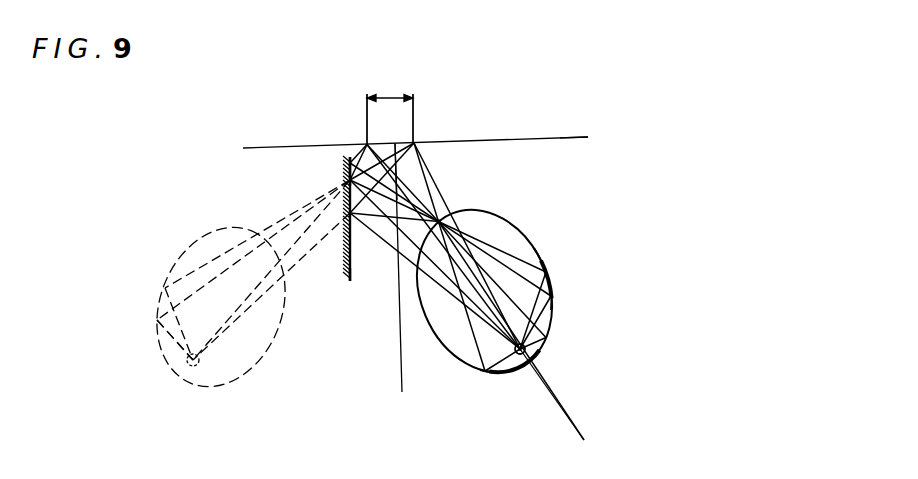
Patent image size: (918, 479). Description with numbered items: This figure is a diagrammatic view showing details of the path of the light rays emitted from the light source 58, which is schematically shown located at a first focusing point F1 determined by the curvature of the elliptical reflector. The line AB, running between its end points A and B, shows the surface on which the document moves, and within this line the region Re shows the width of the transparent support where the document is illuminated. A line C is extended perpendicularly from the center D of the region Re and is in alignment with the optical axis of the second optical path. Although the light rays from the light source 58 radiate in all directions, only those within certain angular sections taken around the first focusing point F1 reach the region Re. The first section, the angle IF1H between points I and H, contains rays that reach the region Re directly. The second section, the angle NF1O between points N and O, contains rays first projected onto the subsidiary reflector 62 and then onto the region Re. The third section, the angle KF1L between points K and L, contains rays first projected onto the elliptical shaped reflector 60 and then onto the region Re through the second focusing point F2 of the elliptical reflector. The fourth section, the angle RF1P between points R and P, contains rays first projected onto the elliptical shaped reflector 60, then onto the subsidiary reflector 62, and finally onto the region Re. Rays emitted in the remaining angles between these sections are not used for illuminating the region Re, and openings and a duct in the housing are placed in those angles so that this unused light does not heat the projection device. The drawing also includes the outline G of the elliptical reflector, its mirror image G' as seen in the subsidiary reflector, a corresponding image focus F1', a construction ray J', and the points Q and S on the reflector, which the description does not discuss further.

The light source 58 is at (520, 372).
The elliptical shaped reflector 60 is at (548, 270).
The subsidiary reflector 62 is at (349, 282).
The end point of line AB A is at (403, 148).
The end point of line AB B is at (584, 138).
The line perpendicular to region Re C is at (400, 380).
The center of region Re D is at (405, 142).
The elliptical mirror G is at (484, 286).
The virtual image of elliptical mirror G' is at (205, 307).
The boundary point of angle IF1H H is at (418, 142).
The boundary point of angle IF1H I is at (366, 141).
The virtual ray J' is at (153, 358).
The boundary point of angle KF1L K is at (492, 372).
The boundary point of angle KF1L L is at (548, 344).
The boundary point of angle NF1O N is at (348, 224).
The boundary point of angle NF1O O is at (349, 170).
The boundary point of angle RF1P P is at (543, 268).
The point Q is at (349, 181).
The boundary point of angle RF1P R is at (549, 294).
The point S is at (350, 158).
The first focusing point F1 is at (571, 360).
The second focusing point F2 is at (446, 215).
The virtual image of first focus F1' is at (215, 406).
The region Re is at (390, 105).